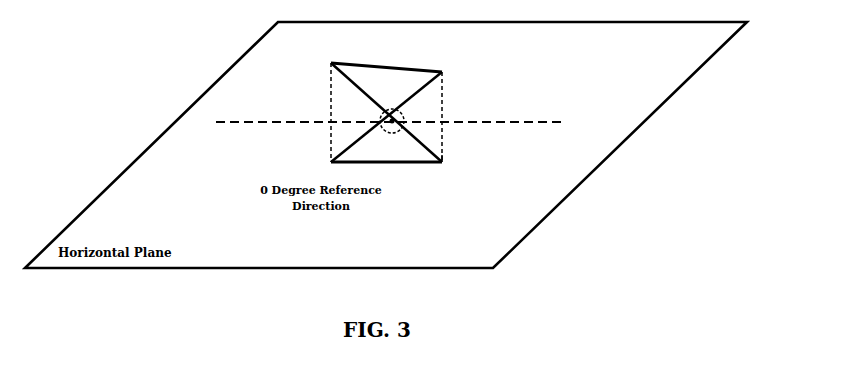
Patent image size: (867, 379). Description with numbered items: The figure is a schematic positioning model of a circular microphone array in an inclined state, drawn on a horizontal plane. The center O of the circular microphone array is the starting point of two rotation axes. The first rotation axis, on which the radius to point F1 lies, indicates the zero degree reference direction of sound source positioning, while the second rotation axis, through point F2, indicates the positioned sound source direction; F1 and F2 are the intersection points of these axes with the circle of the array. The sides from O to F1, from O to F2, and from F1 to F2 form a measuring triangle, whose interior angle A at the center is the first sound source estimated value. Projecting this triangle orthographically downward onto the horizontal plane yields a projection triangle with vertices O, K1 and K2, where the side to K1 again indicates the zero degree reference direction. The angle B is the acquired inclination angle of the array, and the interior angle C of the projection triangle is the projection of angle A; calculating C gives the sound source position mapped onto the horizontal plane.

The intersection point of first rotation axis and circle F1 is at (382, 103).
The intersection point of second rotation axis and circle F2 is at (398, 106).
The projection of intersection point F1 on horizontal plane K1 is at (375, 167).
The projection of intersection point F2 on horizontal plane K2 is at (454, 171).
The center of circular microphone array O is at (410, 118).
The first sound source estimated value A is at (389, 98).
The inclination angle of microphone array B is at (373, 122).
The interior angle of projection triangle C is at (390, 144).